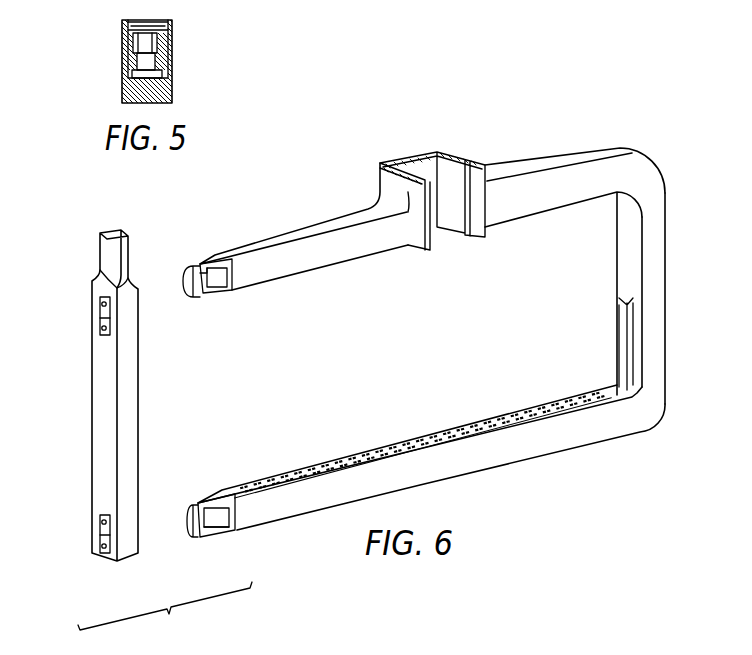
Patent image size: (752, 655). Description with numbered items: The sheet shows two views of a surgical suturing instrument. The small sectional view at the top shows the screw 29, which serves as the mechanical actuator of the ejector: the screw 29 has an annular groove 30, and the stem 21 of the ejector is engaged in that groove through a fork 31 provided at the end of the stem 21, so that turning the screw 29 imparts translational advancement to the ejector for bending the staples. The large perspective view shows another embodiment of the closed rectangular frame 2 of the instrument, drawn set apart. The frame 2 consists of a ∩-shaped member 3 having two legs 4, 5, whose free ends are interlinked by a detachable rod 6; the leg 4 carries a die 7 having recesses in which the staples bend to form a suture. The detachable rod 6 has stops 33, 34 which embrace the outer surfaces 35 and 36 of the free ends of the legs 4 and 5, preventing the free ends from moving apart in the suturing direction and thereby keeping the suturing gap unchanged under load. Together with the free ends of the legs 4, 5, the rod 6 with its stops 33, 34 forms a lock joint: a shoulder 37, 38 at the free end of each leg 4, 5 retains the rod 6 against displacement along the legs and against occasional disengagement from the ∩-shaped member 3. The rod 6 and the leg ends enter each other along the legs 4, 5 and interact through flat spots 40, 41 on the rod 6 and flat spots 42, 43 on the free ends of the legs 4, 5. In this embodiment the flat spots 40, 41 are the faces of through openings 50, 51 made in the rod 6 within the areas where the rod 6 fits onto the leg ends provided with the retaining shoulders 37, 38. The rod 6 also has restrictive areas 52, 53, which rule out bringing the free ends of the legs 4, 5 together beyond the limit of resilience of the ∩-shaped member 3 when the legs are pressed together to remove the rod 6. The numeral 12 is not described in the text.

In FIG. 6, the closed rectangular frame 2 is at (578, 158).
In FIG. 6, the ∩-shaped member 3 is at (665, 270).
In FIG. 6, the leg 4 is at (300, 505).
In FIG. 6, the leg 5 is at (290, 232).
In FIG. 6, the detachable rod 6 is at (92, 422).
In FIG. 6, the die 7 is at (318, 467).
In FIG. 6, the slot in side member 12 is at (653, 327).
In FIG. 5, the stem 21 is at (172, 85).
In FIG. 5, the screw 29 is at (160, 26).
In FIG. 5, the annular groove 30 is at (143, 62).
In FIG. 5, the fork 31 is at (158, 61).
In FIG. 6, the stop 33 is at (97, 555).
In FIG. 6, the stop 34 is at (103, 295).
In FIG. 6, the outer surface 35 is at (210, 530).
In FIG. 6, the outer surface 36 is at (207, 264).
In FIG. 6, the shoulder 37 is at (200, 538).
In FIG. 6, the shoulder 38 is at (198, 265).
In FIG. 6, the flat spot 40 is at (103, 525).
In FIG. 6, the flat spot 41 is at (102, 310).
In FIG. 6, the flat spot 42 is at (212, 523).
In FIG. 6, the flat spot 43 is at (210, 285).
In FIG. 6, the through opening 50 is at (102, 537).
In FIG. 6, the through opening 51 is at (98, 323).
In FIG. 6, the restrictive area 52 is at (102, 518).
In FIG. 6, the restrictive area 53 is at (107, 330).